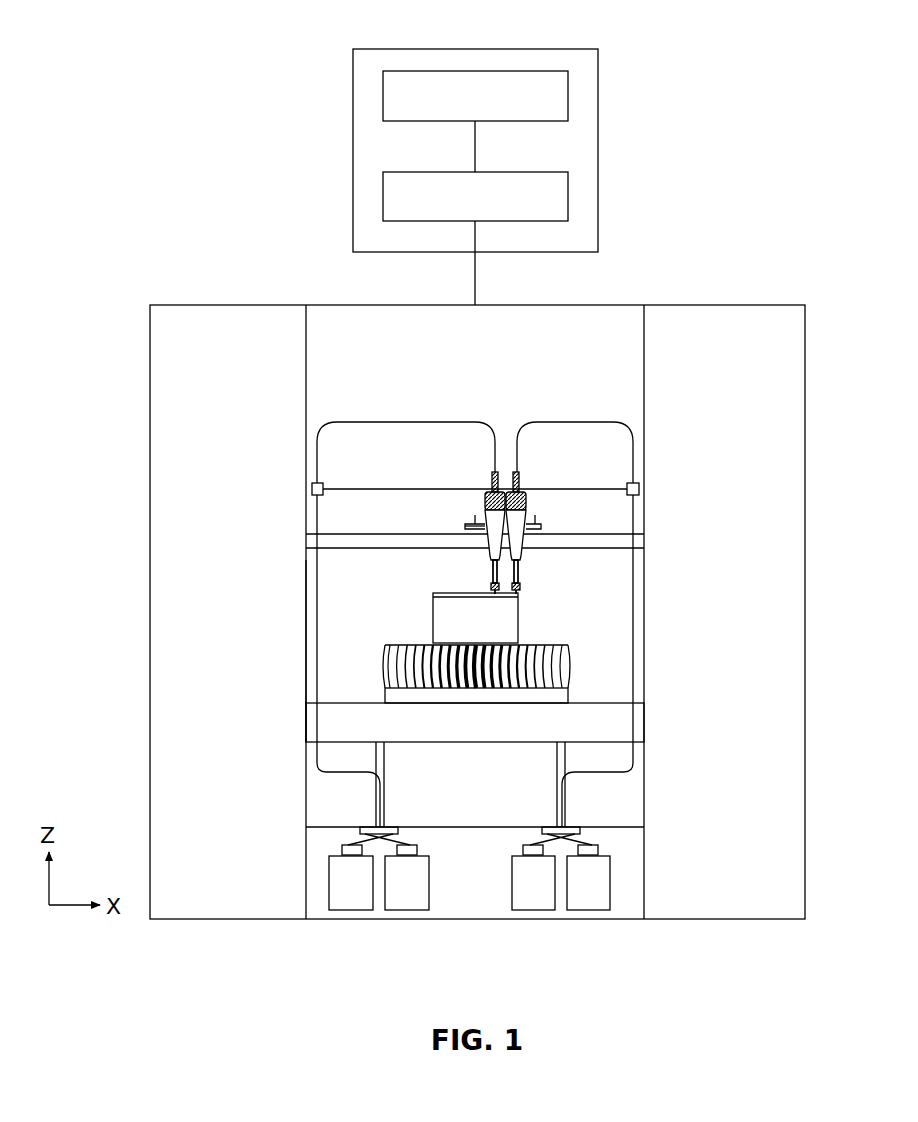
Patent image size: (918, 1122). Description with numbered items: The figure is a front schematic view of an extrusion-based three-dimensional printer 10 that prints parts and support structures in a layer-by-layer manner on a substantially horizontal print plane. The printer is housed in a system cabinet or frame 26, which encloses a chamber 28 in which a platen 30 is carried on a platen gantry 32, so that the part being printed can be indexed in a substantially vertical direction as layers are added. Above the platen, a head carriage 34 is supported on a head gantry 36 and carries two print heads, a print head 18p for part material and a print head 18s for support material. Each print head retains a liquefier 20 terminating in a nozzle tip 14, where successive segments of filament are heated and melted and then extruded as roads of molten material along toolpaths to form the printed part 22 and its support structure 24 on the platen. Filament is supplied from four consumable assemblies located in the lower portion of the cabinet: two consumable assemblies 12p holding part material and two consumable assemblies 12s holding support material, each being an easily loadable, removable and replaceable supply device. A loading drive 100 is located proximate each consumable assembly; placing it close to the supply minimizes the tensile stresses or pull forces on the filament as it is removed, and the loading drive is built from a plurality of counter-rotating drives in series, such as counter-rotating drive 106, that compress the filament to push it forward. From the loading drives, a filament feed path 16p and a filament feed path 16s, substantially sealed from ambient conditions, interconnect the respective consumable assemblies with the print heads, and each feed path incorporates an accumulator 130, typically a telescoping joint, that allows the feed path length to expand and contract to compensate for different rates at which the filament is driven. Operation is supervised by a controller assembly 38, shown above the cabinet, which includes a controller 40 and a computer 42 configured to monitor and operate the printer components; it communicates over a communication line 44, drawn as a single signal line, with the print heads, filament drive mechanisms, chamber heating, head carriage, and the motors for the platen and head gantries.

The 3D printer 10 is at (198, 103).
The consumable assembly for part material 12p is at (352, 910).
The consumable assembly for support material 12s is at (533, 910).
The nozzle tip 14 is at (494, 598).
The filament feed path for part material 16p is at (447, 421).
The filament feed path for support material 16s is at (576, 421).
The print head for part material 18p is at (476, 519).
The print head for support material 18s is at (535, 519).
The liquefier 20 is at (492, 580).
The 3D part 22 is at (433, 616).
The support structure 24 is at (569, 696).
The system cabinet or frame 26 is at (305, 614).
The chamber 28 is at (303, 682).
The platen 30 is at (646, 718).
The platen gantry 32 is at (569, 808).
The head carriage 34 is at (470, 525).
The head gantry 36 is at (392, 533).
The controller assembly 38 is at (404, 48).
The controller 40 is at (570, 197).
The computer 42 is at (570, 97).
The communication line 44 is at (477, 292).
The loading drive 100 is at (342, 851).
The counter-rotating drive 106 is at (360, 830).
The accumulator 130 is at (313, 485).